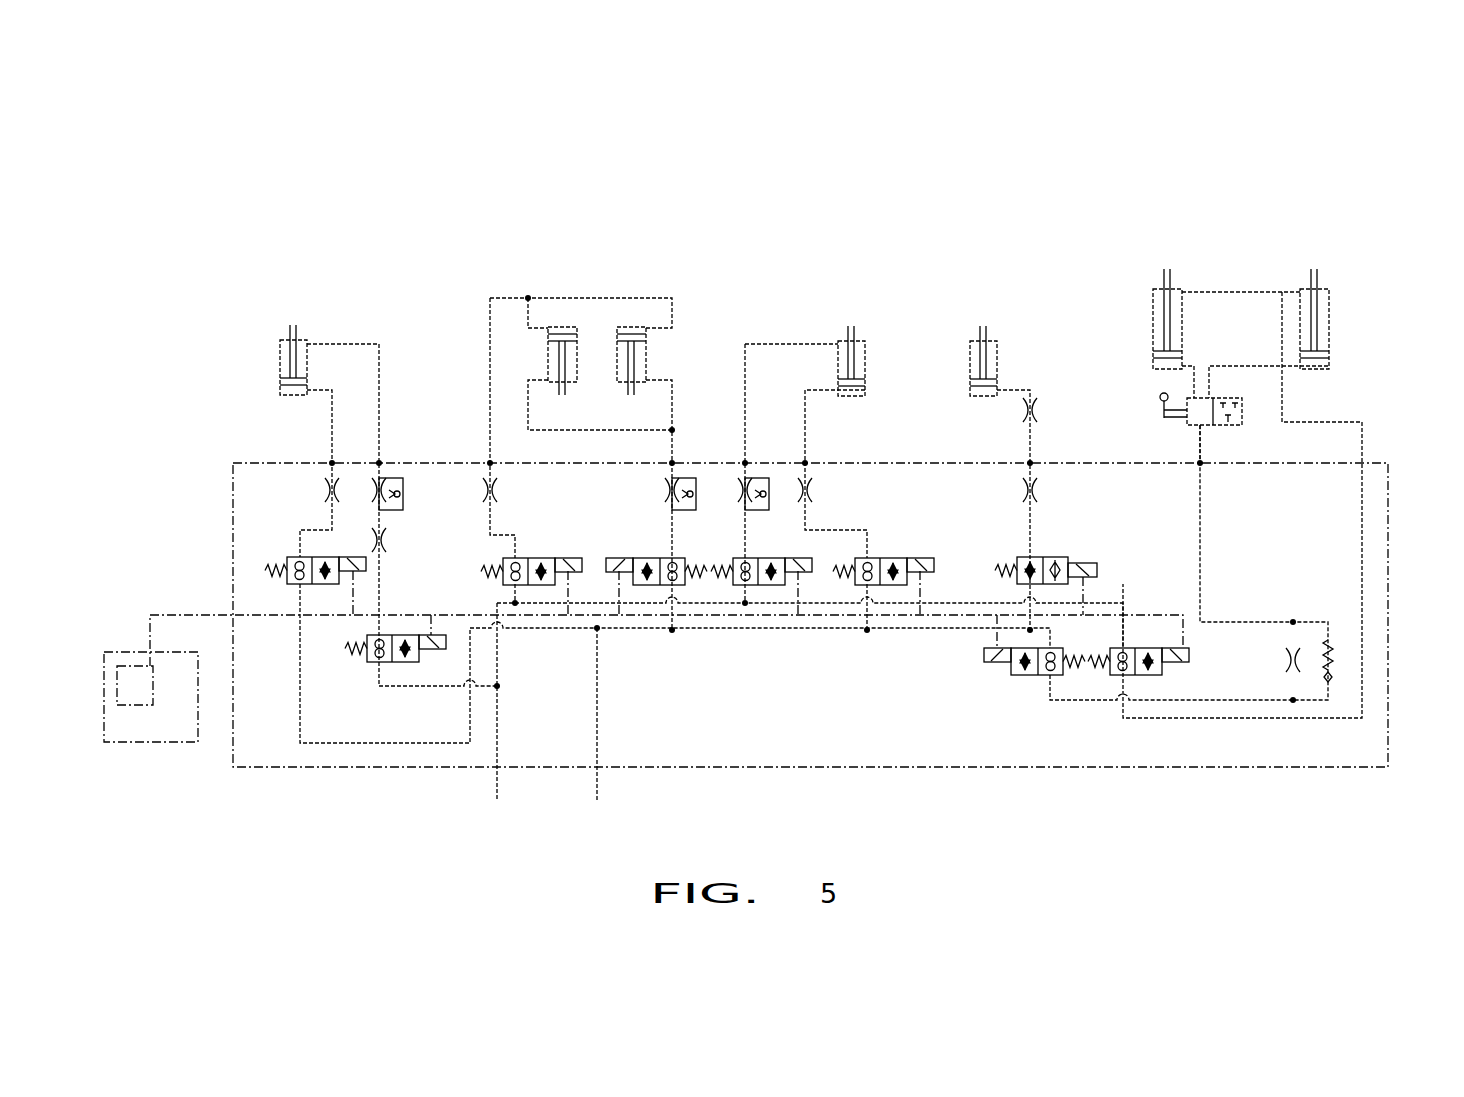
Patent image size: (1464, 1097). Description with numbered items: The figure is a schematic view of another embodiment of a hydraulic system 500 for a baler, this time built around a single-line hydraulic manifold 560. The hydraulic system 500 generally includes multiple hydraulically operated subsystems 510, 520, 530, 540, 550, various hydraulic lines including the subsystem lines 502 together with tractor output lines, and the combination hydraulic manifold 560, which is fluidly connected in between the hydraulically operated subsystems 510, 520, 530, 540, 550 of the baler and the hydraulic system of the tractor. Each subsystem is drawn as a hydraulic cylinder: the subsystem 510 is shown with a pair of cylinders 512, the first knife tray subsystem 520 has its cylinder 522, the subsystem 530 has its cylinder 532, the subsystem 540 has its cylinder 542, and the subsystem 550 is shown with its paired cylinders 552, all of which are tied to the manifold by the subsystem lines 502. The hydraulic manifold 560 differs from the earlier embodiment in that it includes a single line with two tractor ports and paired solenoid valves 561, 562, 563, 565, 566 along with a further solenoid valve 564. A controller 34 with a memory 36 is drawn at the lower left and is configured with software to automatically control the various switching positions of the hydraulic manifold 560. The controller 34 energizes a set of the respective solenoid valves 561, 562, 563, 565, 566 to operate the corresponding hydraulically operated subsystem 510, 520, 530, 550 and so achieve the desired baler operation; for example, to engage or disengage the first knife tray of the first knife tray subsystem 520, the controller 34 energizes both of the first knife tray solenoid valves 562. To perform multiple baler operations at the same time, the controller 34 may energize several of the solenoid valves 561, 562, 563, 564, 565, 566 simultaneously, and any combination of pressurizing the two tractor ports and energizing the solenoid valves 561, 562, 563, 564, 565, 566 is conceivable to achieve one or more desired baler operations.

The hydraulic system 500 is at (1085, 195).
The subsystem lines 502 is at (490, 380).
The hydraulically operated subsystem 510 is at (630, 278).
The hydraulic cylinders 512 is at (553, 330).
The first knife tray subsystem 520 is at (306, 322).
The hydraulic cylinder 522 is at (280, 345).
The hydraulically operated subsystem 530 is at (856, 326).
The hydraulic cylinder 532 is at (865, 350).
The hydraulically operated subsystem 540 is at (1003, 323).
The hydraulic cylinder 542 is at (997, 370).
The hydraulically operated subsystem 550 is at (1292, 268).
The hydraulic cylinders 552 is at (1152, 300).
The single-line hydraulic manifold 560 is at (1388, 518).
The solenoid valve 561 is at (640, 548).
The first knife tray solenoid valve 562 is at (290, 552).
The solenoid valve 563 is at (889, 555).
The solenoid valve 564 is at (1052, 548).
The solenoid valve 565 is at (1000, 680).
The solenoid valve 566 is at (1185, 676).
The controller 34 is at (155, 742).
The memory 36 is at (125, 666).